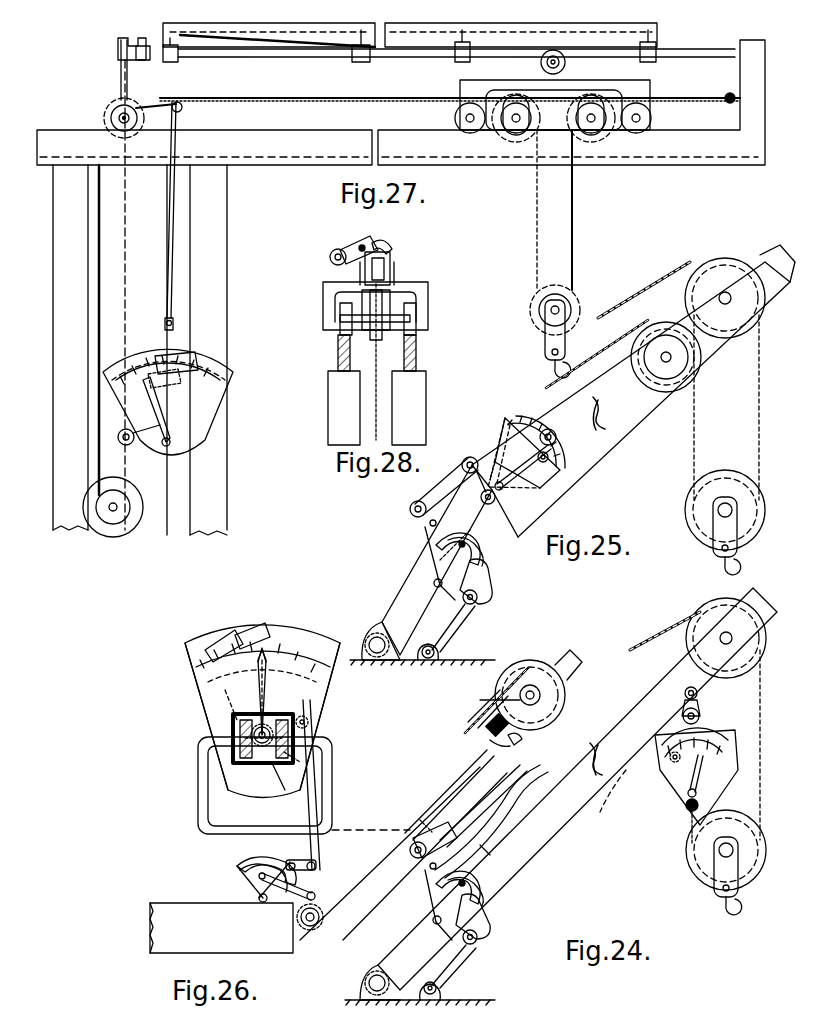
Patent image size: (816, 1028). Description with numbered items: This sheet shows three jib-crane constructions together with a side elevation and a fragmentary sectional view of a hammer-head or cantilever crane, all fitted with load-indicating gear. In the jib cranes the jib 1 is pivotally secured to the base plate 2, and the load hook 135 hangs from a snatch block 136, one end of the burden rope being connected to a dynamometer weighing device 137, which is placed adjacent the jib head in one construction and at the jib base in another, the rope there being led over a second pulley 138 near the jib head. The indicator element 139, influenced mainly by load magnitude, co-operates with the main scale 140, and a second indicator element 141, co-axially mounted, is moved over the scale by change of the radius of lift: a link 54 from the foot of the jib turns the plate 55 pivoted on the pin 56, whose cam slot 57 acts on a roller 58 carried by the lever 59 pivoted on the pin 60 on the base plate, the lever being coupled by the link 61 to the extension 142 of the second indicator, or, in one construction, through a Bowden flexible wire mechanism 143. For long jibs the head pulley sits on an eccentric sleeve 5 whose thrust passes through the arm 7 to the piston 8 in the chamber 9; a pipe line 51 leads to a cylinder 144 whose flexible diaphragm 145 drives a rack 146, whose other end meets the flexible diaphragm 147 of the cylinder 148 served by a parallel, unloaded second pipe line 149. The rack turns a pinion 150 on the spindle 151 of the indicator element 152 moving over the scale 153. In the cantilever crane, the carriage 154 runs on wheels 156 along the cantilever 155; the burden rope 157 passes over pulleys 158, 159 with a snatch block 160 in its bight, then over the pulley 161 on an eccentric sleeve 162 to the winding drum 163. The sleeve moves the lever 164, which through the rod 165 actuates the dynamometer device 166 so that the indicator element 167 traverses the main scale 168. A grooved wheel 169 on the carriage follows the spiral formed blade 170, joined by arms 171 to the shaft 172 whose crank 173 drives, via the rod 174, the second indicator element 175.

In FIG. 25, the jib 1 is at (605, 437).
In FIG. 24, the jib 1 is at (565, 800).
In FIG. 25, the base plate 2 is at (445, 660).
In FIG. 26, the base plate 2 is at (275, 940).
In FIG. 24, the base plate 2 is at (440, 999).
In FIG. 24, the eccentric sleeve 5 is at (530, 685).
In FIG. 24, the arm 7 is at (500, 700).
In FIG. 24, the piston 8 is at (478, 720).
In FIG. 24, the chamber 9 is at (512, 742).
In FIG. 26, the pipe line 51 is at (200, 786).
In FIG. 24, the pipe line 51 is at (445, 825).
In FIG. 25, the link 54 is at (455, 625).
In FIG. 26, the link 54 is at (262, 877).
In FIG. 24, the link 54 is at (455, 965).
In FIG. 25, the plate 55 is at (480, 582).
In FIG. 26, the plate 55 is at (260, 900).
In FIG. 24, the plate 55 is at (482, 915).
In FIG. 25, the pin 56 is at (434, 583).
In FIG. 26, the pin 56 is at (258, 902).
In FIG. 24, the pin 56 is at (434, 920).
In FIG. 25, the cam slot 57 is at (470, 558).
In FIG. 26, the cam slot 57 is at (250, 866).
In FIG. 24, the cam slot 57 is at (478, 906).
In FIG. 25, the roller 58 is at (438, 545).
In FIG. 26, the roller 58 is at (262, 858).
In FIG. 24, the roller 58 is at (478, 888).
In FIG. 25, the lever 59 is at (417, 520).
In FIG. 26, the lever 59 is at (315, 898).
In FIG. 24, the lever 59 is at (418, 860).
In FIG. 25, the pin 60 is at (446, 508).
In FIG. 26, the pin 60 is at (295, 853).
In FIG. 24, the pin 60 is at (450, 840).
In FIG. 25, the link 61 is at (452, 490).
In FIG. 26, the link 61 is at (308, 815).
In FIG. 25, the load hook 135 is at (714, 573).
In FIG. 24, the load hook 135 is at (716, 914).
In FIG. 25, the snatch block 136 is at (690, 508).
In FIG. 24, the snatch block 136 is at (700, 860).
In FIG. 25, the dynamometer weighing device 137 is at (505, 492).
In FIG. 24, the dynamometer weighing device 137 is at (688, 805).
In FIG. 25, the second pulley 138 is at (672, 392).
In FIG. 25, the indicator element 139 is at (540, 470).
In FIG. 24, the indicator element 139 is at (703, 772).
In FIG. 25, the main scale 140 is at (506, 428).
In FIG. 24, the main scale 140 is at (722, 738).
In FIG. 25, the second indicator element 141 is at (528, 422).
In FIG. 26, the second indicator element 141 is at (240, 640).
In FIG. 24, the second indicator element 141 is at (698, 718).
In FIG. 25, the extension 142 is at (492, 457).
In FIG. 26, the extension 142 is at (331, 740).
In FIG. 24, the flexible wire mechanism 143 is at (470, 812).
In FIG. 26, the cylinder 144 is at (233, 733).
In FIG. 26, the flexible diaphragm 145 is at (240, 724).
In FIG. 26, the rack 146 is at (245, 740).
In FIG. 26, the flexible diaphragm 147 is at (293, 760).
In FIG. 26, the cylinder 148 is at (288, 785).
In FIG. 24, the second pipe line 149 is at (470, 762).
In FIG. 26, the pinion 150 is at (270, 733).
In FIG. 26, the spindle 151 is at (308, 724).
In FIG. 26, the indicator element 152 is at (258, 686).
In FIG. 26, the scale 153 is at (280, 648).
In FIG. 27, the carriage 154 is at (640, 85).
In FIG. 28, the carriage 154 is at (326, 300).
In FIG. 27, the cantilever 155 is at (255, 150).
In FIG. 28, the cantilever 155 is at (338, 354).
In FIG. 27, the wheels 156 is at (455, 118).
In FIG. 28, the wheels 156 is at (346, 320).
In FIG. 27, the burden rope 157 is at (537, 232).
In FIG. 28, the burden rope 157 is at (372, 381).
In FIG. 27, the pulley 158 is at (600, 130).
In FIG. 27, the pulley 159 is at (528, 130).
In FIG. 28, the pulley 159 is at (380, 308).
In FIG. 27, the snatch block 160 is at (565, 300).
In FIG. 27, the pulley 161 is at (105, 118).
In FIG. 27, the eccentric sleeve 162 is at (115, 112).
In FIG. 27, the winding drum 163 is at (95, 508).
In FIG. 27, the lever 164 is at (183, 108).
In FIG. 27, the rod 165 is at (173, 233).
In FIG. 27, the dynamometer device 166 is at (203, 404).
In FIG. 27, the indicator element 167 is at (155, 425).
In FIG. 27, the main scale 168 is at (216, 387).
In FIG. 27, the grooved wheel 169 is at (541, 64).
In FIG. 28, the grooved wheel 169 is at (388, 266).
In FIG. 27, the spiral formed blade 170 is at (183, 26).
In FIG. 28, the spiral formed blade 170 is at (383, 243).
In FIG. 27, the arms 171 is at (178, 56).
In FIG. 28, the arms 171 is at (355, 243).
In FIG. 27, the shaft 172 is at (320, 57).
In FIG. 27, the crank 173 is at (140, 52).
In FIG. 28, the crank 173 is at (330, 257).
In FIG. 27, the rod 174 is at (121, 72).
In FIG. 27, the second indicator element 175 is at (200, 366).